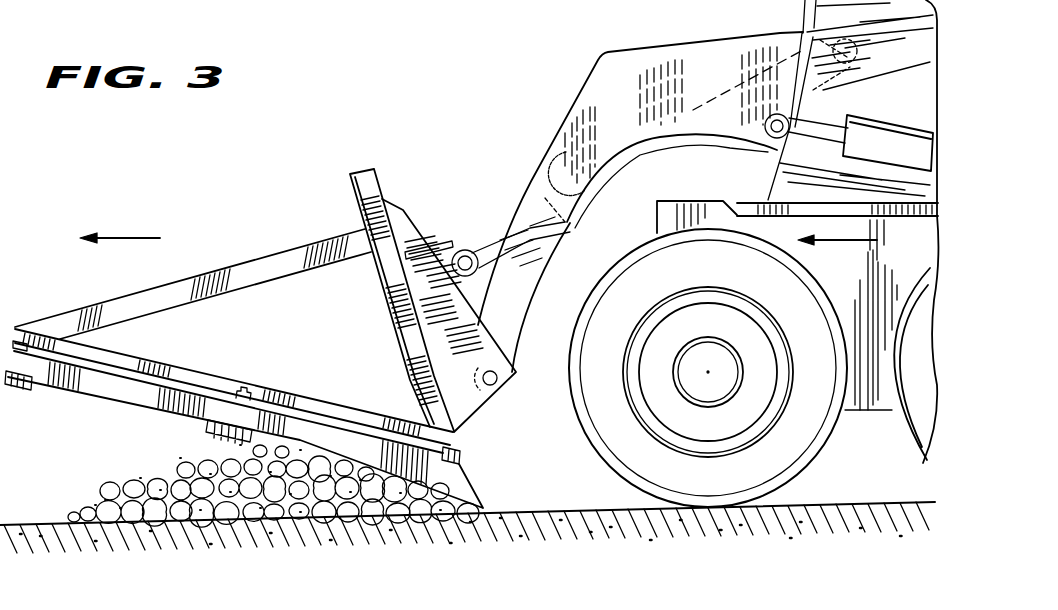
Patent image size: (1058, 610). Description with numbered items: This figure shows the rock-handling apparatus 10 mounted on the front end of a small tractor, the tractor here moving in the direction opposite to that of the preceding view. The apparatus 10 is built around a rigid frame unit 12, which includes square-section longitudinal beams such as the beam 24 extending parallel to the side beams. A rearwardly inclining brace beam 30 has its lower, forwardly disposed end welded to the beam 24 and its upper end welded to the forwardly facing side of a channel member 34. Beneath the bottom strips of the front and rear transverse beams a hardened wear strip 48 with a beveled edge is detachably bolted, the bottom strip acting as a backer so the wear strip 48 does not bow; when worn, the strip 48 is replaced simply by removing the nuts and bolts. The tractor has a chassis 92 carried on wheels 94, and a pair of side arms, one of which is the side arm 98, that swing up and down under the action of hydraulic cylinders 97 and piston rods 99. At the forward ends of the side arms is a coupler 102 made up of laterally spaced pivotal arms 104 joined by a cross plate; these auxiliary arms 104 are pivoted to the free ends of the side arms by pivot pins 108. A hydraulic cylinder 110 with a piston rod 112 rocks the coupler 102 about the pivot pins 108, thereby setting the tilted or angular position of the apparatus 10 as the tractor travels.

The apparatus 10 is at (166, 428).
The rigid frame unit 12 is at (135, 406).
The beam 24 is at (190, 367).
The brace beam 30 is at (277, 256).
The channel member 34 is at (397, 302).
The hardened wear strip 48 is at (450, 559).
The chassis 92 is at (668, 227).
The wheels 94 is at (800, 455).
The hydraulic cylinders 97 is at (908, 152).
The side arm 98 is at (540, 296).
The piston rods 99 is at (822, 114).
The coupler 102 is at (395, 199).
The pivotal arms 104 is at (443, 337).
The pivot pins 108 is at (494, 384).
The hydraulic cylinder 110 is at (671, 151).
The piston rod 112 is at (500, 246).